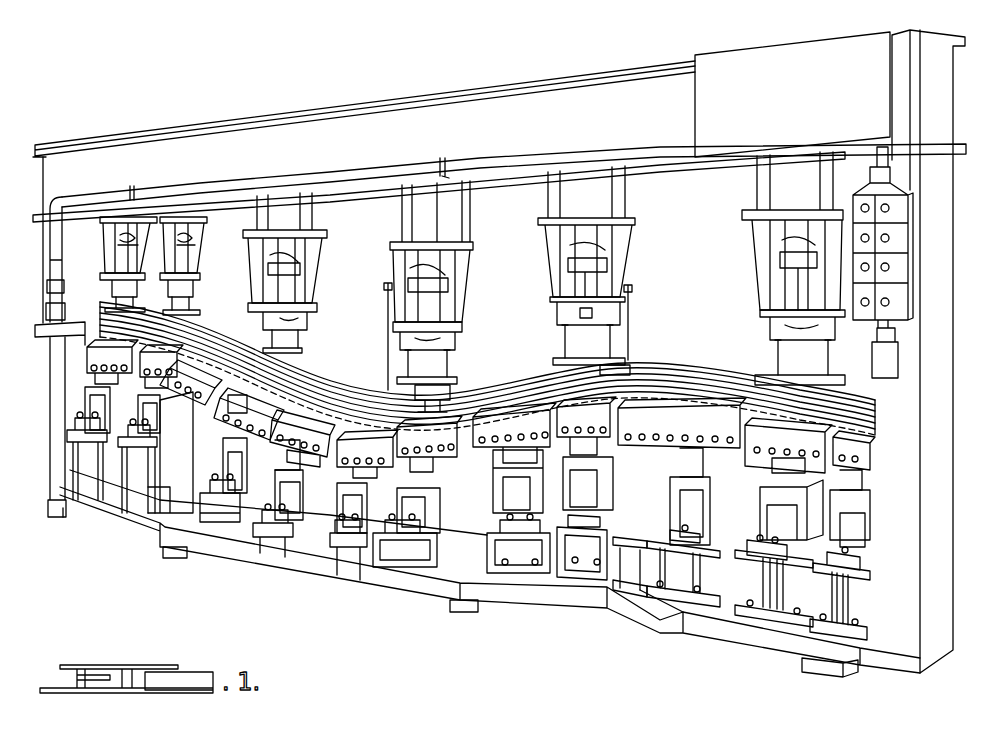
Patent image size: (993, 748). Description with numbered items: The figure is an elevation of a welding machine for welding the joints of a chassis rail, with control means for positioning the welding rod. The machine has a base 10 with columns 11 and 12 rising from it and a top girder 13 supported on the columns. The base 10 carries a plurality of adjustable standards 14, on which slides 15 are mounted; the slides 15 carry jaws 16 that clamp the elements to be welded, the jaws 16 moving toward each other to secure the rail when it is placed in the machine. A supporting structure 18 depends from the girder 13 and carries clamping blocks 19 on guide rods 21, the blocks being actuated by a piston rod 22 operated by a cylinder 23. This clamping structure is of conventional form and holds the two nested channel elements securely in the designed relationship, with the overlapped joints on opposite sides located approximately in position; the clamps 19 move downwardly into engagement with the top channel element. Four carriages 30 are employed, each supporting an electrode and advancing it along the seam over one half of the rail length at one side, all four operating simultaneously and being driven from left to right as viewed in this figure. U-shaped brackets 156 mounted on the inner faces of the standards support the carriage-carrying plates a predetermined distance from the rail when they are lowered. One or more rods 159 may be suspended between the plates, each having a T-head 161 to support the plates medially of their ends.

The base 10 is at (330, 577).
The column 11 is at (937, 458).
The column 12 is at (55, 385).
The top girder 13 is at (537, 97).
The adjustable standard 14 is at (447, 523).
The slide 15 is at (465, 470).
The jaw 16 is at (492, 446).
The supporting structure 18 is at (415, 242).
The clamping block 19 is at (449, 373).
The guide rod 21 is at (403, 340).
The piston rod 22 is at (583, 331).
The cylinder 23 is at (420, 288).
The carriage 30 is at (210, 328).
The U-shaped bracket 156 is at (100, 262).
The rod 159 is at (387, 312).
The T-head 161 is at (395, 395).